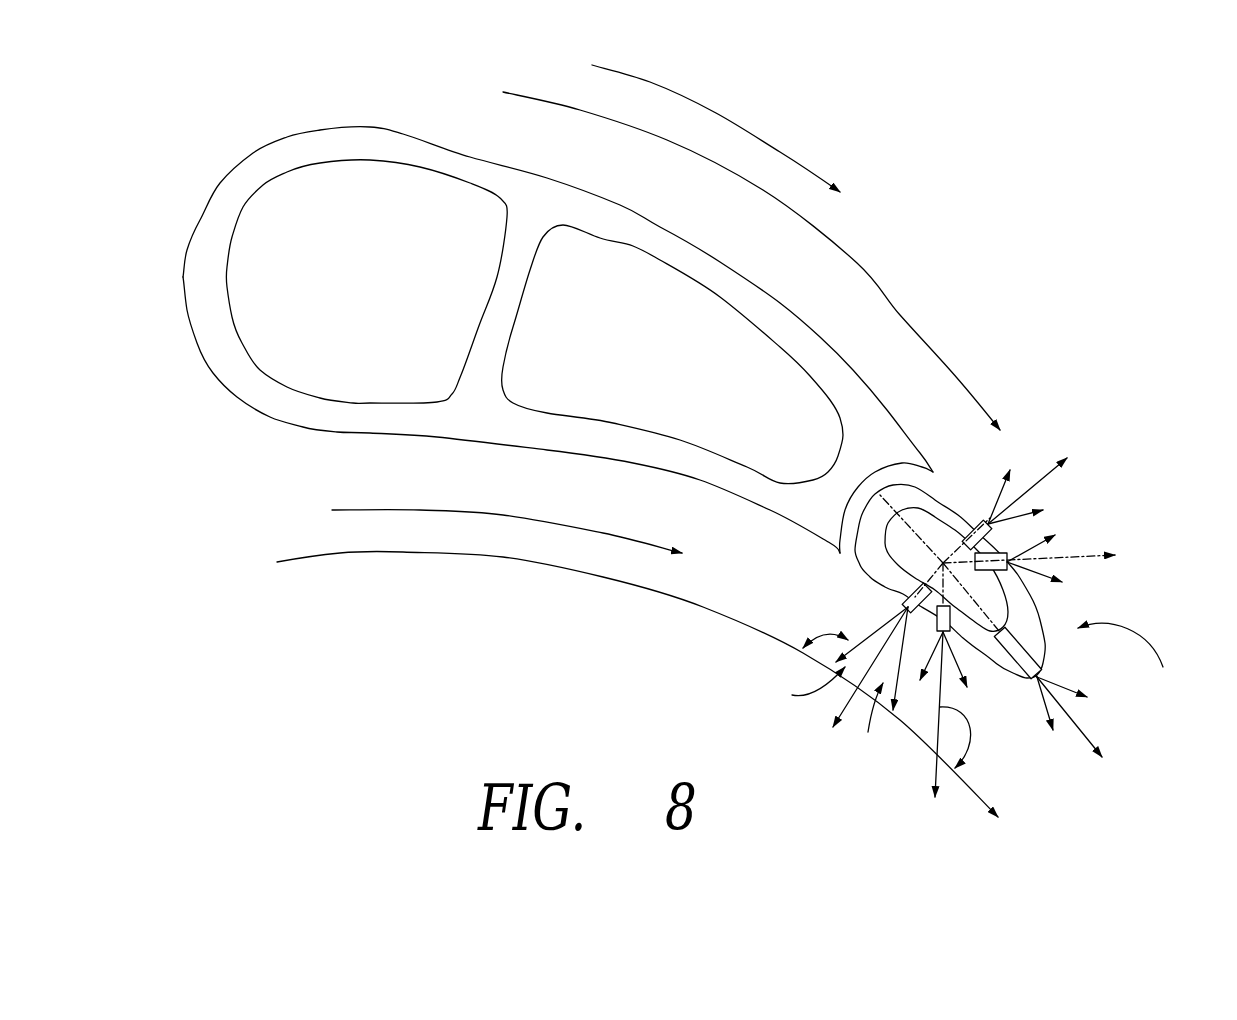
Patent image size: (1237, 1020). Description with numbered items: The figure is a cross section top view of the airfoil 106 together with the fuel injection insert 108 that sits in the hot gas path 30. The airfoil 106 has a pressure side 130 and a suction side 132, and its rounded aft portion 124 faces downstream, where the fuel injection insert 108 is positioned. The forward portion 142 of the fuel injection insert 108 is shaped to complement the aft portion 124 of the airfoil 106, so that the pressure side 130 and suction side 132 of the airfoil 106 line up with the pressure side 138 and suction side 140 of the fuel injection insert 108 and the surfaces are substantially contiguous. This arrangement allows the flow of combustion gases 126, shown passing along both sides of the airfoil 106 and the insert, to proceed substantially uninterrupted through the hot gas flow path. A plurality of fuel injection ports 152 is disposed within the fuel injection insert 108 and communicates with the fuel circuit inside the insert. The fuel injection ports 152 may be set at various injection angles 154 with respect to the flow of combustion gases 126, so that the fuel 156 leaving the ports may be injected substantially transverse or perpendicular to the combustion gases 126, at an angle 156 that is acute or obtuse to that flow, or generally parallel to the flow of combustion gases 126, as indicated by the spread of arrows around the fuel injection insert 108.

The hot gas path 30 is at (685, 100).
The airfoil 106 is at (873, 173).
The fuel injection insert 108 is at (1142, 659).
The aft portion 124 is at (852, 482).
The flow of combustion gases 126 is at (857, 263).
The pressure side 130 is at (547, 450).
The suction side 132 is at (620, 207).
The pressure side 138 is at (868, 573).
The suction side 140 is at (1032, 603).
The forward portion 142 is at (903, 492).
The fuel injection ports 152 is at (1046, 648).
The injection angle 154 is at (1017, 767).
The fuel 156 is at (1067, 555).